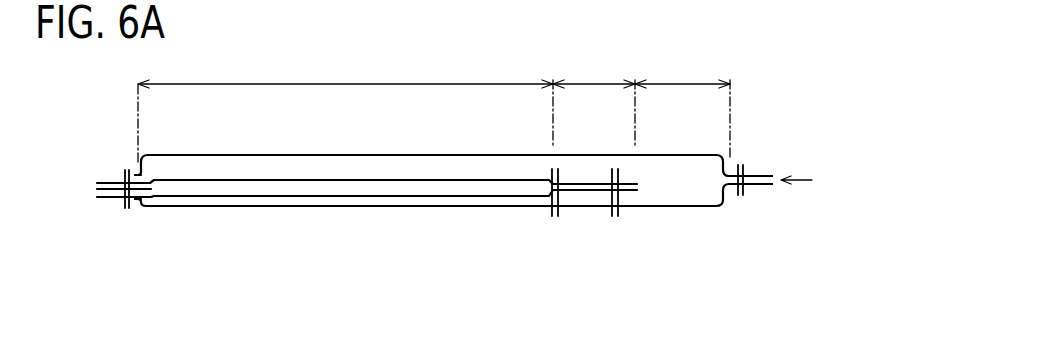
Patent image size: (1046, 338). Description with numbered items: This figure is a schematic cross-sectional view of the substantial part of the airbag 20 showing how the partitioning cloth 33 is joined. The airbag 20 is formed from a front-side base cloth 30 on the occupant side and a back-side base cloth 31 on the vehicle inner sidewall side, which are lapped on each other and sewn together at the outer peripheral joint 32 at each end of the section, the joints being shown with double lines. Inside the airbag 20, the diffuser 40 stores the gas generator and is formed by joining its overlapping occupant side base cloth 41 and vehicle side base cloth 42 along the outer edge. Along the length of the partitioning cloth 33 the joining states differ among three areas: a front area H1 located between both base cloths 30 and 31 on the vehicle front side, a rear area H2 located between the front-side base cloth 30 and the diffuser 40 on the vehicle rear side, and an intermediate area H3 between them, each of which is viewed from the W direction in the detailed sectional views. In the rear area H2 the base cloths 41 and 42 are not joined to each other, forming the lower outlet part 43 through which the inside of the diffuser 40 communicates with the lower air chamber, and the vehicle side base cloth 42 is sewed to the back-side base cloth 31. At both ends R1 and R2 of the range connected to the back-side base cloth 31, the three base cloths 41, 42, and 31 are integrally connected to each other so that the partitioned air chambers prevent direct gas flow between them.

The airbag 20 is at (742, 157).
The front-side base cloth 30 is at (327, 155).
The back-side base cloth 31 is at (670, 207).
The outer peripheral joint 32 is at (133, 173).
The partitioning cloth 33 is at (645, 173).
The diffuser 40 is at (273, 207).
The occupant side base cloth 41 is at (423, 180).
The vehicle side base cloth 42 is at (425, 199).
The lower outlet part 43 is at (350, 187).
The end of the semi-perimeter portion R1 is at (555, 188).
The end of the semi-perimeter portion R2 is at (127, 206).
The viewing direction W is at (806, 181).
The front area H1 is at (682, 105).
The rear area H2 is at (345, 108).
The intermediate area H3 is at (594, 98).